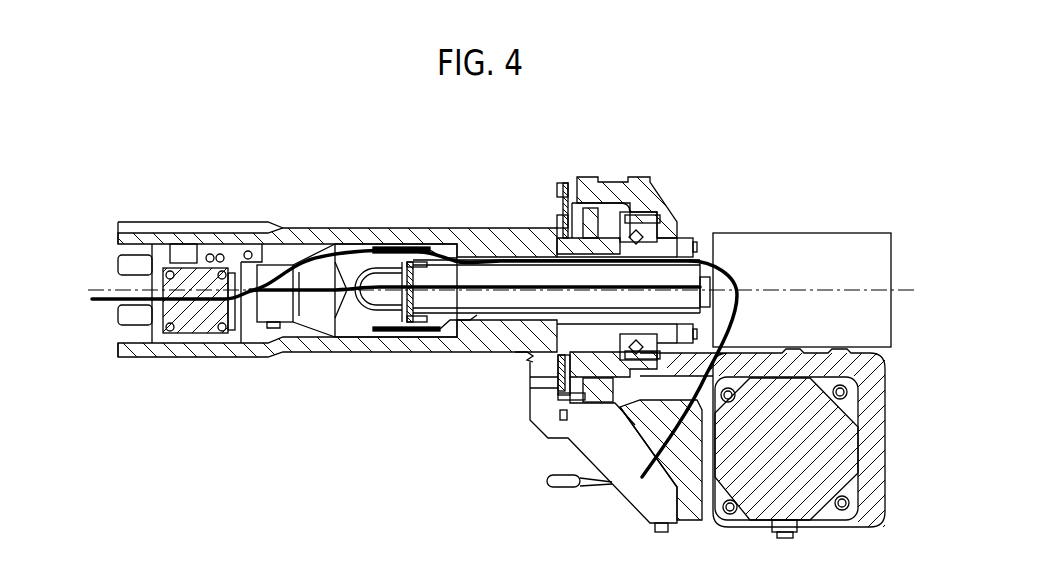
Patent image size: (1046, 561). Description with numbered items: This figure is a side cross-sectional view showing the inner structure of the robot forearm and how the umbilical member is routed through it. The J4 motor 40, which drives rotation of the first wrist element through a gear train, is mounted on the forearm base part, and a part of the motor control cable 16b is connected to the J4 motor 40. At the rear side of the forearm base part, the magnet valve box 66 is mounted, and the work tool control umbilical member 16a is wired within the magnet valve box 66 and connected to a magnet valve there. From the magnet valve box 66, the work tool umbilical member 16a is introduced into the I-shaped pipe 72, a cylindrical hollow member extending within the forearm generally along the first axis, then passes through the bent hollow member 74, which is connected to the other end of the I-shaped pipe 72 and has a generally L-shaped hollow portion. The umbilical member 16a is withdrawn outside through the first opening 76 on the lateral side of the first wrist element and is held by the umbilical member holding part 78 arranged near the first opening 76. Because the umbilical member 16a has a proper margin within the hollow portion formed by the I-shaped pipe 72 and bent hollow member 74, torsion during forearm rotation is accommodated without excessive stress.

The work tool control umbilical member 16a is at (500, 282).
The motor control cable 16b is at (743, 267).
The J4 motor 40 is at (800, 438).
The magnet valve box 66 is at (853, 233).
The I-shaped pipe 72 is at (497, 318).
The bent hollow member 74 is at (364, 312).
The first opening 76 is at (386, 276).
The umbilical member holding part 78 is at (277, 312).